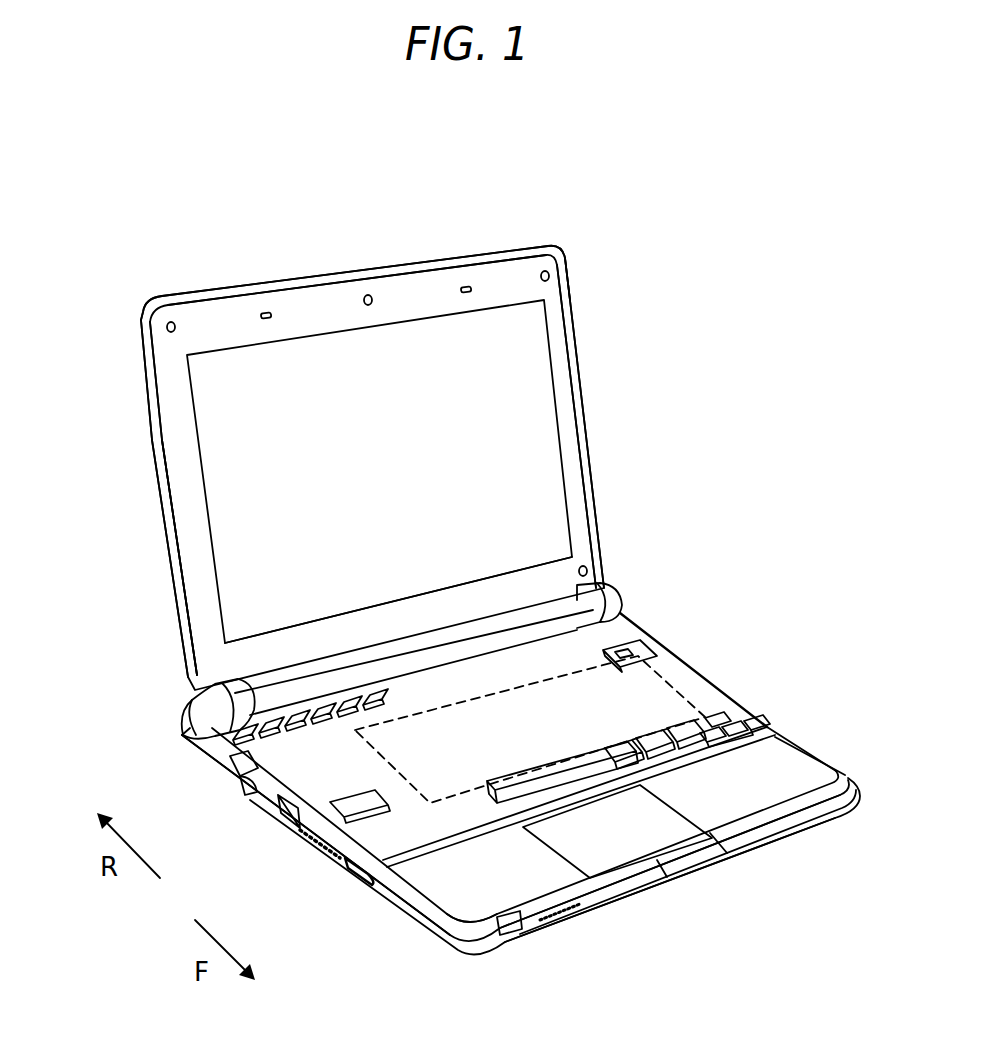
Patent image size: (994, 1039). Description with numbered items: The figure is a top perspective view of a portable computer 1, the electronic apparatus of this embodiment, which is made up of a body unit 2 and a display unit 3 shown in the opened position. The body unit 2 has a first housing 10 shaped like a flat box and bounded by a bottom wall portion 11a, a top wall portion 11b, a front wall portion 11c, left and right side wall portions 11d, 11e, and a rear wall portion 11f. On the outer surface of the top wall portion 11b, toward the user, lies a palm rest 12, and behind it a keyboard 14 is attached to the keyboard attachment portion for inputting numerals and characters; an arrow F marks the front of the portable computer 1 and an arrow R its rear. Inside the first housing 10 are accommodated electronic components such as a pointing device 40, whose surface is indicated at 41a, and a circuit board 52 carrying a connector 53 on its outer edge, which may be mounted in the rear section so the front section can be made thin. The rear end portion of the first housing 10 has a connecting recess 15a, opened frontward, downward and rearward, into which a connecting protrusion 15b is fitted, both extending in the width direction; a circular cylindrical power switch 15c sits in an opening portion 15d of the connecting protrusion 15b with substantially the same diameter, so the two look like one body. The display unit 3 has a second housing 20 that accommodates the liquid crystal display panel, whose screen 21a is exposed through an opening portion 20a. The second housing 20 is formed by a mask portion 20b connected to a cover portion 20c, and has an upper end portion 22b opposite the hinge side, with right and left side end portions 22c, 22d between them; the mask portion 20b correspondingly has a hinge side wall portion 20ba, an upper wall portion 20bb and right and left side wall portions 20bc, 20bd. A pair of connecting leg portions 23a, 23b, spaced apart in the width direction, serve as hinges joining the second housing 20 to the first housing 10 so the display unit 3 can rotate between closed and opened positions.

The portable computer 1 is at (246, 233).
The body unit 2 is at (691, 636).
The display unit 3 is at (590, 308).
The first housing 10 is at (494, 775).
The bottom wall portion 11a is at (298, 842).
The top wall portion 11b is at (484, 905).
The front wall portion 11c is at (598, 910).
The left side wall portion 11d is at (385, 897).
The right side wall portion 11e is at (828, 762).
The rear wall portion 11f is at (182, 733).
The palm rest 12 is at (528, 938).
The keyboard 14 is at (580, 698).
The connecting recess 15a is at (236, 700).
The connecting protrusion 15b is at (372, 665).
The power switch 15c is at (430, 645).
The opening portion 15d is at (438, 650).
The second housing 20 is at (361, 443).
The opening portion 20a is at (195, 486).
The mask portion 20b is at (560, 280).
The cover portion 20c is at (150, 407).
The hinge side wall portion 20ba is at (318, 633).
The upper wall portion 20bb is at (325, 318).
The right side wall portion 20bc is at (578, 392).
The left side wall portion 20bd is at (188, 518).
The screen 21a is at (326, 452).
The upper end portion 22b is at (405, 290).
The right side end portion 22c is at (576, 450).
The left side end portion 22d is at (188, 556).
The connecting leg portion 23a is at (215, 700).
The connecting leg portion 23b is at (612, 610).
The pointing device 40 is at (687, 807).
The touch pad surface 41a is at (674, 832).
The circuit board 52 is at (678, 677).
The connector 53 is at (238, 782).